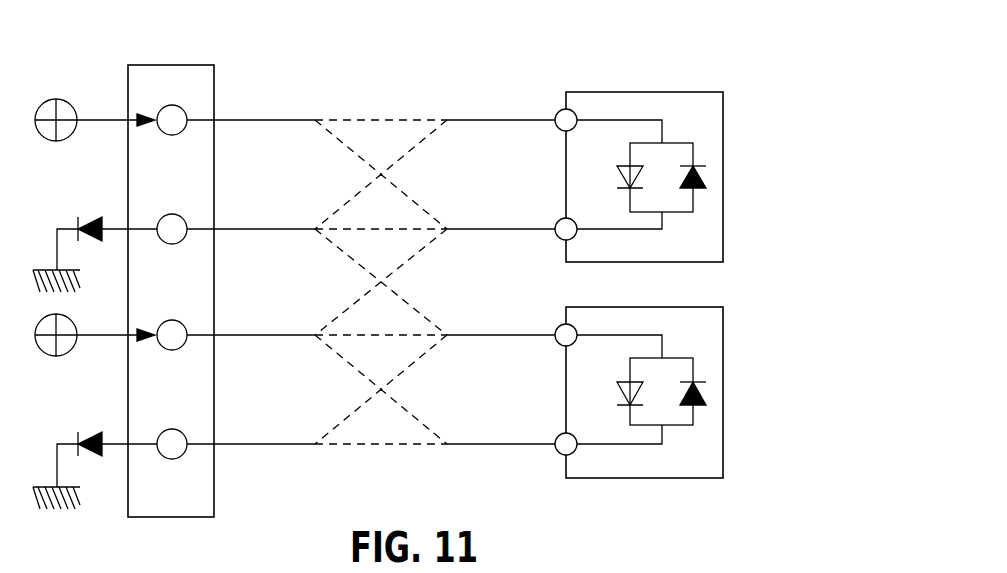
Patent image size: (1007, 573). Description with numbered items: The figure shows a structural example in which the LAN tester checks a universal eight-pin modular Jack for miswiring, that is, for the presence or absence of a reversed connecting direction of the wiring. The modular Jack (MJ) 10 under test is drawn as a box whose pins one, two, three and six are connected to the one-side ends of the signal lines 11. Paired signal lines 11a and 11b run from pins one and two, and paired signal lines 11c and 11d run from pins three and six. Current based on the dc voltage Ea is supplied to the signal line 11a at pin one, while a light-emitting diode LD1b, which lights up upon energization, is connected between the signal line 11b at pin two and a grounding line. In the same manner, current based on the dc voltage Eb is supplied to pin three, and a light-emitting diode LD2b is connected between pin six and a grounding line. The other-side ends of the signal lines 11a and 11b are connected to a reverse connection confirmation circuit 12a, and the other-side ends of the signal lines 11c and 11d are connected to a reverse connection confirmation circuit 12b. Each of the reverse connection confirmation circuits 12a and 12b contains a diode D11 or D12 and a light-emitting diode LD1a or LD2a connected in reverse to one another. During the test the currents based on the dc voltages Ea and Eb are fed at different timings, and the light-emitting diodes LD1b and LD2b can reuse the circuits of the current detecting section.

The modular Jack 10 is at (166, 65).
The modular Jack MJ is at (171, 499).
The signal lines 11 is at (371, 287).
The signal line 11a is at (263, 122).
The signal line 11b is at (263, 231).
The signal line 11c is at (263, 337).
The signal line 11d is at (263, 446).
The reverse connection confirmation circuit 12a is at (648, 155).
The reverse connection confirmation circuit 12b is at (648, 370).
The dc voltage Ea is at (63, 99).
The dc voltage Eb is at (63, 314).
The light-emitting diode LD1a is at (698, 165).
The light-emitting diode LD1b is at (78, 217).
The light-emitting diode LD2a is at (698, 381).
The light-emitting diode LD2b is at (78, 432).
The diode D11 is at (623, 188).
The diode D12 is at (623, 405).